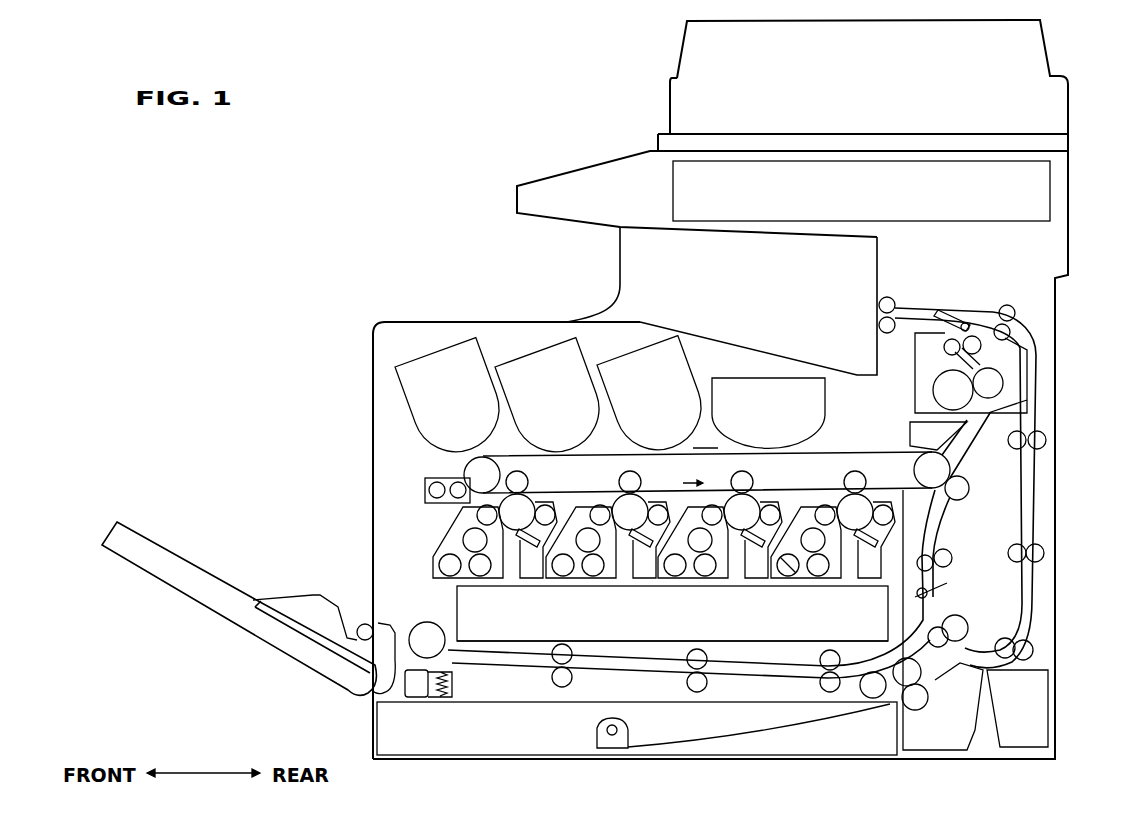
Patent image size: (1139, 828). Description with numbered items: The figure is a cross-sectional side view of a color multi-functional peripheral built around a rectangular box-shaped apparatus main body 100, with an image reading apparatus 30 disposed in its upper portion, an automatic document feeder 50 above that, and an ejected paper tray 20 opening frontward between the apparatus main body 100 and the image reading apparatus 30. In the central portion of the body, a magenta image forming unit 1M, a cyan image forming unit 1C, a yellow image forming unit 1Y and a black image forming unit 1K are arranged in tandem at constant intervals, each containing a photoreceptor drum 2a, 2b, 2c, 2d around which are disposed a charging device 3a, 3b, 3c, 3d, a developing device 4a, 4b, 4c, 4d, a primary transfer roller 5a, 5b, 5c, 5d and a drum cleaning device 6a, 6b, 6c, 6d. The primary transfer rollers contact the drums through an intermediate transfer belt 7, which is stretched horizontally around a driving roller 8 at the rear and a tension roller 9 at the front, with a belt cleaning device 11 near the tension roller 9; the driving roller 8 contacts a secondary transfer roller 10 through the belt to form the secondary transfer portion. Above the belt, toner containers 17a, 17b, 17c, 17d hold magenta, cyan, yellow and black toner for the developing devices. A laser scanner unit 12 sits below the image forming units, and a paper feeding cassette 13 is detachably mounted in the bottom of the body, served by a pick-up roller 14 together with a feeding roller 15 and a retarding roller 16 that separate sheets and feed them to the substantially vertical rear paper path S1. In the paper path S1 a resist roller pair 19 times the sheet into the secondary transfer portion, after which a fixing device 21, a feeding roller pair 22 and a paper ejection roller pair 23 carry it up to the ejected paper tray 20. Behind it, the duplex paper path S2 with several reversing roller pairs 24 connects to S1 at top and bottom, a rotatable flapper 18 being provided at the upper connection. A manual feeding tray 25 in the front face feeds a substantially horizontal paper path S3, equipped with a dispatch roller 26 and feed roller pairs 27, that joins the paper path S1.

The apparatus main body 100 is at (1057, 415).
The automatic document feeder 50 is at (1050, 50).
The image reading apparatus 30 is at (1052, 201).
The ejected paper tray 20 is at (610, 369).
The toner container 17a is at (438, 347).
The toner container 17b is at (537, 347).
The toner container 17c is at (638, 346).
The toner container 17d is at (773, 378).
The intermediate transfer belt 7 is at (603, 455).
The driving roller 8 is at (910, 452).
The tension roller 9 is at (470, 472).
The secondary transfer roller 10 is at (969, 486).
The belt cleaning device 11 is at (425, 491).
The magenta image forming unit 1M is at (496, 540).
The cyan image forming unit 1C is at (621, 539).
The yellow image forming unit 1Y is at (734, 538).
The black image forming unit 1K is at (844, 538).
The photoreceptor drum 2a is at (541, 500).
The photoreceptor drum 2b is at (648, 497).
The photoreceptor drum 2c is at (759, 497).
The photoreceptor drum 2d is at (873, 496).
The charging device 3a is at (527, 563).
The charging device 3b is at (646, 556).
The charging device 3c is at (761, 559).
The charging device 3d is at (875, 554).
The developing device 4a is at (541, 560).
The developing device 4b is at (672, 561).
The developing device 4c is at (785, 556).
The developing device 4d is at (895, 543).
The primary transfer roller 5a is at (531, 475).
The primary transfer roller 5b is at (613, 475).
The primary transfer roller 5c is at (727, 476).
The primary transfer roller 5d is at (838, 476).
The drum cleaning device 6a is at (456, 541).
The drum cleaning device 6b is at (581, 560).
The drum cleaning device 6c is at (693, 561).
The drum cleaning device 6d is at (806, 556).
The laser scanner unit 12 is at (772, 647).
The paper feeding cassette 13 is at (478, 702).
The pick-up roller 14 is at (870, 698).
The feeding roller 15 is at (672, 613).
The retarding roller 16 is at (923, 712).
The flapper 18 is at (955, 345).
The resist roller pair 19 is at (952, 558).
The fixing device 21 is at (932, 395).
The feeding roller pair 22 is at (943, 357).
The paper ejection roller pair 23 is at (893, 296).
The reversing roller pair 24 is at (1010, 304).
The manual feeding tray 25 is at (292, 660).
The dispatch roller 26 is at (420, 622).
The feed roller pair 27 is at (566, 643).
The paper path S1 is at (935, 528).
The paper path S2 is at (1022, 518).
The paper path S3 is at (603, 673).